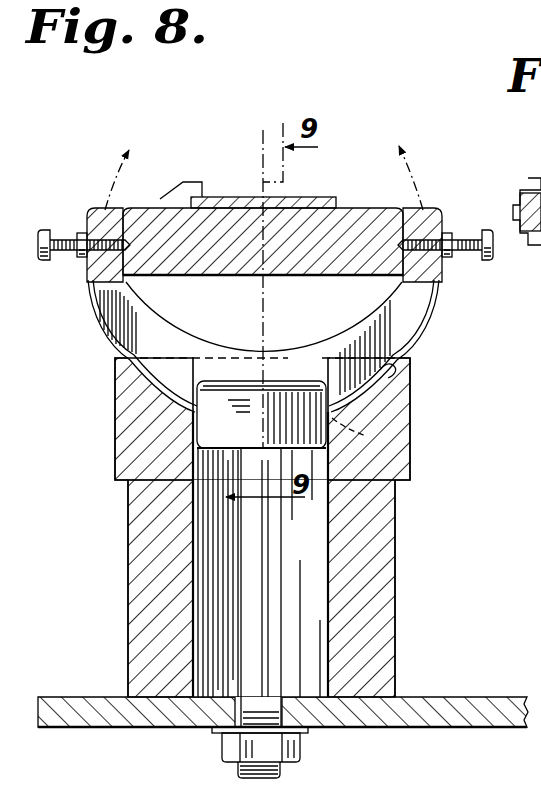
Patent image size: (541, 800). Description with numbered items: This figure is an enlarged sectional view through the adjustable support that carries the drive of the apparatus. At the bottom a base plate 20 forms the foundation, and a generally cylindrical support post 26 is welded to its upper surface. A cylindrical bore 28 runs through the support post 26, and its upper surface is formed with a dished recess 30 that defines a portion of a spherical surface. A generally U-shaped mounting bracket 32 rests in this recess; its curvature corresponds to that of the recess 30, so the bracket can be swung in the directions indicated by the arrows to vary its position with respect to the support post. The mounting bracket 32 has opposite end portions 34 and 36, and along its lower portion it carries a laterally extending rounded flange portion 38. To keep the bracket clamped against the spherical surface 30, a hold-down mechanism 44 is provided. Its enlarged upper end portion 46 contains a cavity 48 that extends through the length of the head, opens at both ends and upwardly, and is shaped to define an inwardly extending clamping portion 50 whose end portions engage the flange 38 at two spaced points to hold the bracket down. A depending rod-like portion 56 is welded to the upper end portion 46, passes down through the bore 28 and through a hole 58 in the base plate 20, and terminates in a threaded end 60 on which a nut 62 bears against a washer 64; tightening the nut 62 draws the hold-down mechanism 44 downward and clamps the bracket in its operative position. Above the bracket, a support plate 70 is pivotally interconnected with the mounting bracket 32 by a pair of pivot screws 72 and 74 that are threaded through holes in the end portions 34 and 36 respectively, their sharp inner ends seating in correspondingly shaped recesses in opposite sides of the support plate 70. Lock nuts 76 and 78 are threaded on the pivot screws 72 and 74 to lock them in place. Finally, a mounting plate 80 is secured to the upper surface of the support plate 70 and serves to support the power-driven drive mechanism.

The base plate 20 is at (70, 720).
The support post 26 is at (395, 562).
The cylindrical bore 28 is at (328, 600).
The dished recess 30 is at (410, 372).
The U-shaped mounting bracket 32 is at (436, 322).
The end portion of mounting bracket 34 is at (102, 218).
The end portion of mounting bracket 36 is at (430, 222).
The rounded flange portion 38 is at (119, 338).
The hold-down mechanism 44 is at (236, 582).
The enlarged upper end portion 46 is at (214, 383).
The cavity 48 is at (342, 424).
The clamping portion 50 is at (300, 382).
The rod-like portion 56 is at (276, 588).
The hole 58 is at (283, 692).
The threaded end 60 is at (282, 770).
The nut 62 is at (228, 756).
The washer 64 is at (306, 732).
The support plate 70 is at (300, 262).
The pivot screw 72 is at (42, 262).
The pivot screw 74 is at (488, 262).
The lock nut 76 is at (82, 260).
The lock nut 78 is at (448, 260).
The mounting plate 80 is at (318, 203).